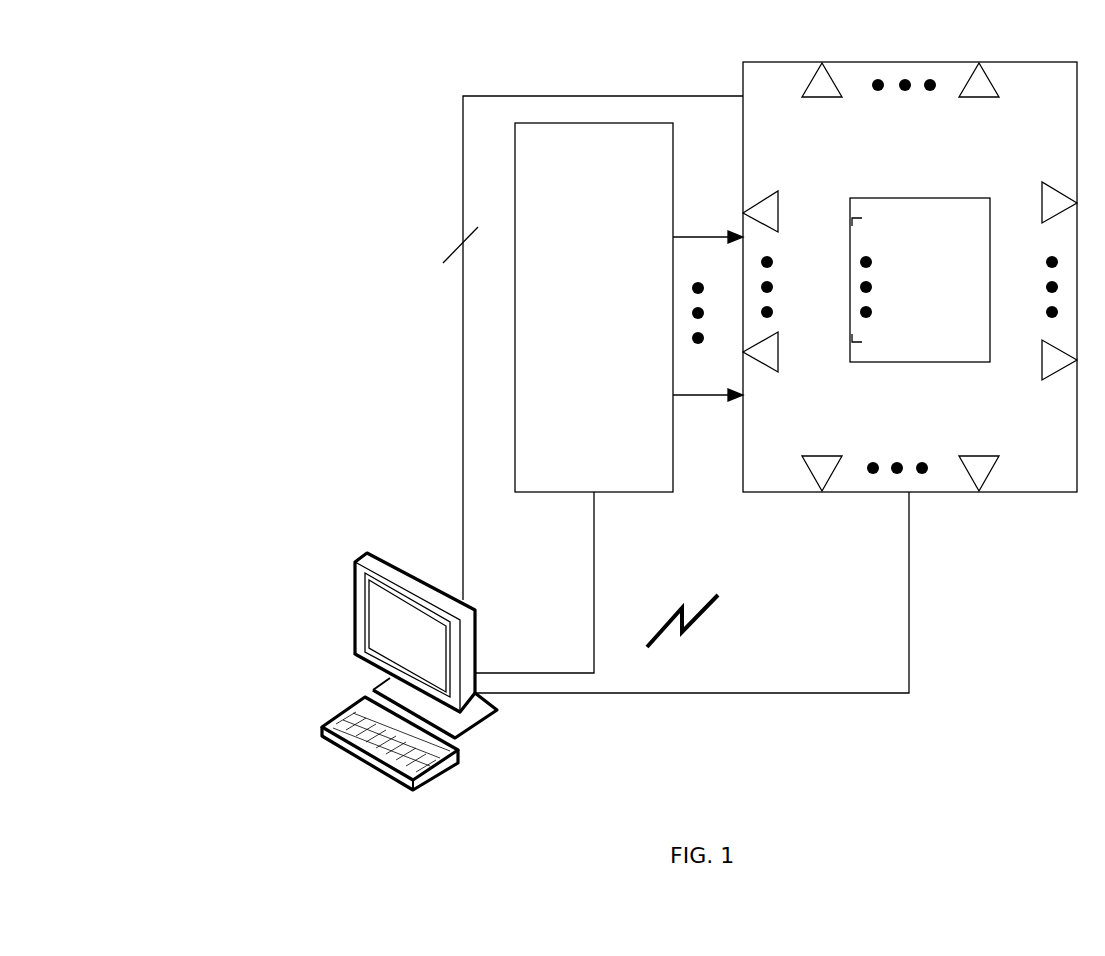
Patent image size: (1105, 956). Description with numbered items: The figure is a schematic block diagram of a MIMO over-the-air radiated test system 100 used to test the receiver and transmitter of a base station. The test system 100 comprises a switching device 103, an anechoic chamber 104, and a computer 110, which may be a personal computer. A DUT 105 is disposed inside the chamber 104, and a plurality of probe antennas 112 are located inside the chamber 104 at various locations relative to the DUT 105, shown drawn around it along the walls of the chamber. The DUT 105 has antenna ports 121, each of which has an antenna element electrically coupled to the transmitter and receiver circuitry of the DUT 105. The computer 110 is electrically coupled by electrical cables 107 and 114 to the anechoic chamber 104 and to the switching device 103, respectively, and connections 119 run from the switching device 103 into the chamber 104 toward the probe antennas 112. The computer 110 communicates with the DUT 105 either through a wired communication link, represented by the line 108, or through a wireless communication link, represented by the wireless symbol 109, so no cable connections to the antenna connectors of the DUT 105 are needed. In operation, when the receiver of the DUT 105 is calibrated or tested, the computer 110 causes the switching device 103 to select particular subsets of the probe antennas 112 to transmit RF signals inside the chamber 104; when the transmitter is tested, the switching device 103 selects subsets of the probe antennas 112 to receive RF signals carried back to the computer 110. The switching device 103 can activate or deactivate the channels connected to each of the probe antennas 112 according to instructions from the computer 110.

The MIMO test system 100 is at (182, 115).
The switching device 103 is at (614, 205).
The anechoic chamber 104 is at (1037, 55).
The DUT 105 is at (919, 306).
The electrical cable 107 is at (463, 550).
The wired communication link 108 is at (910, 620).
The wireless communication link 109 is at (682, 608).
The computer 110 is at (378, 572).
The probe antennas 112 is at (827, 92).
The electrical cable 114 is at (596, 560).
The RF connections 119 is at (670, 237).
The antenna ports 121 is at (855, 222).